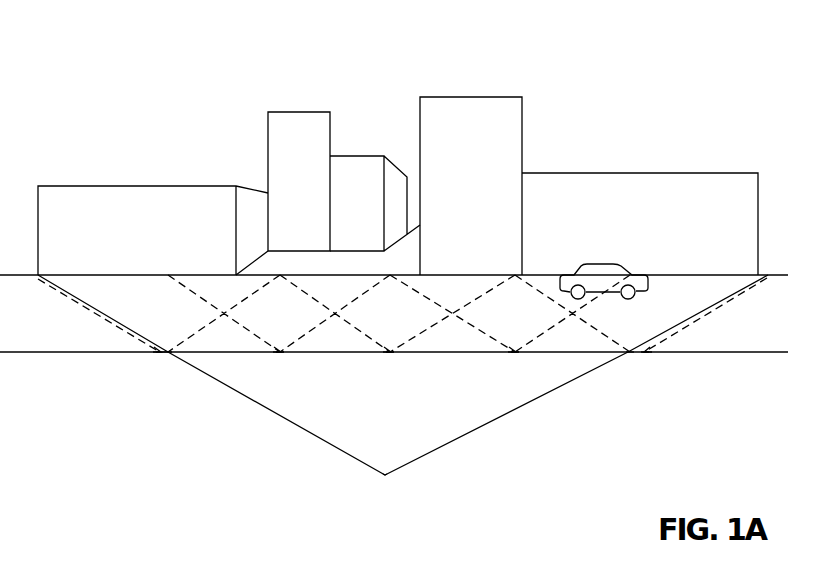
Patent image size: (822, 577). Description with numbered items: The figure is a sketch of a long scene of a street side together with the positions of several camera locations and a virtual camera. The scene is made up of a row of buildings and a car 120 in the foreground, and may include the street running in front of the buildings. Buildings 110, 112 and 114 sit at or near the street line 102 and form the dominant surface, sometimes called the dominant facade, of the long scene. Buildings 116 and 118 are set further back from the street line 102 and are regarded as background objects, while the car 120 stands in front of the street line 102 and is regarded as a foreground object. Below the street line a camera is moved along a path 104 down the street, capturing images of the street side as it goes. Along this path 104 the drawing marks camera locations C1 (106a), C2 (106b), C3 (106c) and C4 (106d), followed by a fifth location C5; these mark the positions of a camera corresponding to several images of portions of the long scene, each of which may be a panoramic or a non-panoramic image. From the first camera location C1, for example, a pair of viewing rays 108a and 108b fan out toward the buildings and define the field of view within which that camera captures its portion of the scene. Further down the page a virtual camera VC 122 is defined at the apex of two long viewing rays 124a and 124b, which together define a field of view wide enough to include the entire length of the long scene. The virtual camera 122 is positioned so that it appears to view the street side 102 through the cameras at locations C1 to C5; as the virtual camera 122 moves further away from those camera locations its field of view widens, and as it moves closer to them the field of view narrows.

The street line 102 is at (781, 275).
The path 104 is at (775, 352).
The camera location C1 106a is at (158, 354).
The camera location C2 106b is at (272, 354).
The camera location C3 106c is at (388, 354).
The camera location C4 106d is at (521, 353).
The viewing ray 108a is at (80, 303).
The viewing ray 108b is at (194, 333).
The building 110 is at (128, 186).
The building 112 is at (478, 97).
The building 114 is at (635, 173).
The building 116 is at (290, 112).
The building 118 is at (362, 156).
The car 120 is at (605, 264).
The virtual camera 122 is at (383, 476).
The viewing ray 124a is at (275, 413).
The viewing ray 124b is at (490, 423).
The camera location C1 is at (158, 371).
The camera location C2 is at (284, 370).
The camera location C3 is at (395, 370).
The camera location C4 is at (514, 370).
The camera location C5 is at (635, 370).